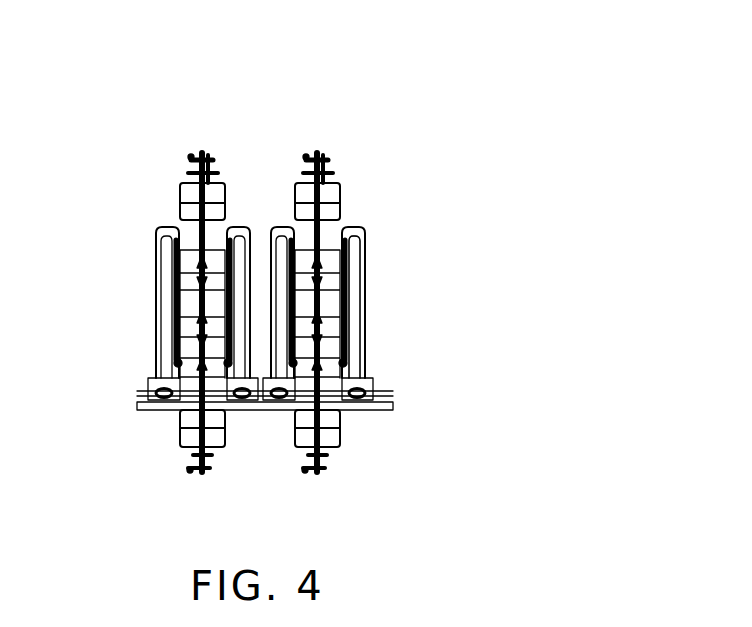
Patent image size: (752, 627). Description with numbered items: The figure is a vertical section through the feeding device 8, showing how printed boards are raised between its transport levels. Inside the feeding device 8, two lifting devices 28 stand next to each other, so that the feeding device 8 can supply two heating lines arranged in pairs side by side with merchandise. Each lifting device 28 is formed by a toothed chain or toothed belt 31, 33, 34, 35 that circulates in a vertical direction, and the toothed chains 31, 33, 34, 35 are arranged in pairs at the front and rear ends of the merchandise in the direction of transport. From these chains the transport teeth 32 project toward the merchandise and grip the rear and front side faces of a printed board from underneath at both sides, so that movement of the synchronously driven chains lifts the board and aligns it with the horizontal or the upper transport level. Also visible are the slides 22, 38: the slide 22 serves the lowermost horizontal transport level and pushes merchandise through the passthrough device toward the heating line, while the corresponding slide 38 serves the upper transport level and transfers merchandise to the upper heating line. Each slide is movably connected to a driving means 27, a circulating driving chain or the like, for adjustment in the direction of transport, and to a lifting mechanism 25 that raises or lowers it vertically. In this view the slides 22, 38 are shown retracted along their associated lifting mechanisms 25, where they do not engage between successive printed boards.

The feeding device 8 is at (183, 79).
The slide 22 is at (180, 425).
The lifting mechanism 25 is at (207, 232).
The driving means 27 is at (327, 173).
The lifting device 28 is at (157, 292).
The toothed chain or toothed belt 31 is at (424, 307).
The transport teeth 32 is at (337, 283).
The toothed chain or toothed belt 33 is at (308, 220).
The toothed chain or toothed belt 34 is at (357, 335).
The toothed chain or toothed belt 35 is at (278, 230).
The slide 38 is at (180, 191).